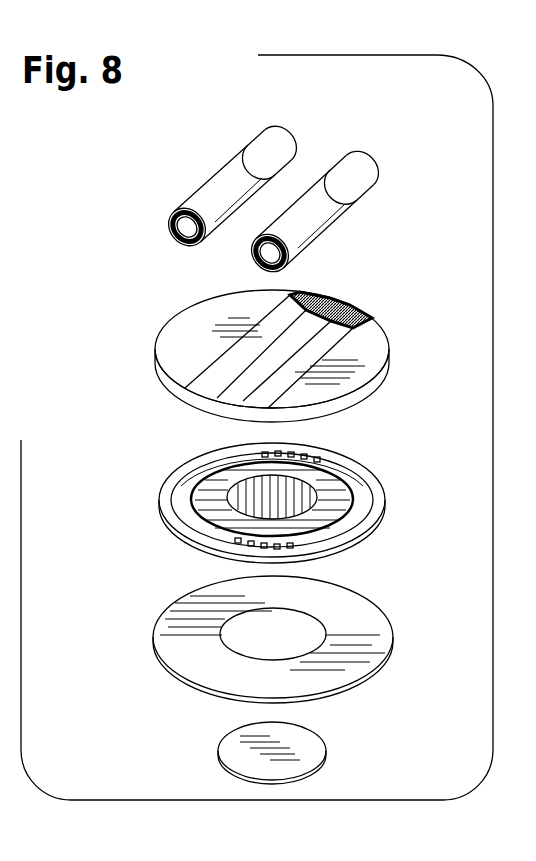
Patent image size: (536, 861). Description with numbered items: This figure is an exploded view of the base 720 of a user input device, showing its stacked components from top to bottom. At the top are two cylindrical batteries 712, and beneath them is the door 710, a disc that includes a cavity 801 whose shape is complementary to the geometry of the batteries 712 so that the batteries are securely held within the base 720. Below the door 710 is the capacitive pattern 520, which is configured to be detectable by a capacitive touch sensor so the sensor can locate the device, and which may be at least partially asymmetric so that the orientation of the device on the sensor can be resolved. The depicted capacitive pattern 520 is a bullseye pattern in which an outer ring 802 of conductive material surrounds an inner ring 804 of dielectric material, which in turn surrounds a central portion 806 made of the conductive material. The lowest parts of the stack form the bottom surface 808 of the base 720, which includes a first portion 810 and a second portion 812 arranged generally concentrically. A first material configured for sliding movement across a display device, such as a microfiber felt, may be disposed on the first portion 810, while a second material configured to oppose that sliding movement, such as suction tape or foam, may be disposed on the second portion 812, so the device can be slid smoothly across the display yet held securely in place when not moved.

The base 720 is at (347, 90).
The batteries 712 is at (178, 145).
The door 710 is at (157, 360).
The cavity 801 is at (337, 295).
The capacitive pattern 520 is at (268, 492).
The outer ring 802 is at (360, 503).
The inner ring 804 is at (323, 478).
The central portion 806 is at (262, 472).
The first portion 810 is at (153, 633).
The bottom surface 808 is at (110, 696).
The second portion 812 is at (218, 752).